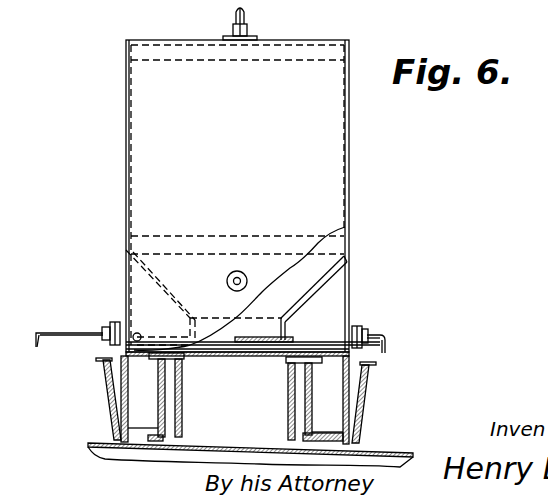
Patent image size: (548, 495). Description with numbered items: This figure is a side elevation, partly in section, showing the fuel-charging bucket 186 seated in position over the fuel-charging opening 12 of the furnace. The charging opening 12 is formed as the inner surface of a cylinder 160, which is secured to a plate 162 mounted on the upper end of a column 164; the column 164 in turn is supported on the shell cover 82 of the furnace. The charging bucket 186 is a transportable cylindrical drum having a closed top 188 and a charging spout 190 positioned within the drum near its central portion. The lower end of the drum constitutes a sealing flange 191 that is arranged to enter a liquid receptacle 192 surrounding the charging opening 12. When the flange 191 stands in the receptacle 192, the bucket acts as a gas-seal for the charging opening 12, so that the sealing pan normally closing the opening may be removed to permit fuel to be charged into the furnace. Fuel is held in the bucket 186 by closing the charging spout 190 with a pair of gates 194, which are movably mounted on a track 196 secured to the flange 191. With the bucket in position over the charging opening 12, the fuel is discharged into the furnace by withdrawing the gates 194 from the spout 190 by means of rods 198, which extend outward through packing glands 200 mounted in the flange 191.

The fuel-charging opening 12 is at (207, 435).
The shell cover 82 is at (387, 449).
The cylinder 160 is at (296, 384).
The plate 162 is at (352, 328).
The column 164 is at (158, 398).
The charging bucket 186 is at (346, 145).
The closed top 188 is at (325, 43).
The charging spout 190 is at (296, 308).
The sealing flange 191 is at (121, 391).
The liquid receptacle 192 is at (358, 378).
The gates 194 is at (186, 347).
The track 196 is at (279, 343).
The rods 198 is at (65, 331).
The packing glands 200 is at (104, 342).